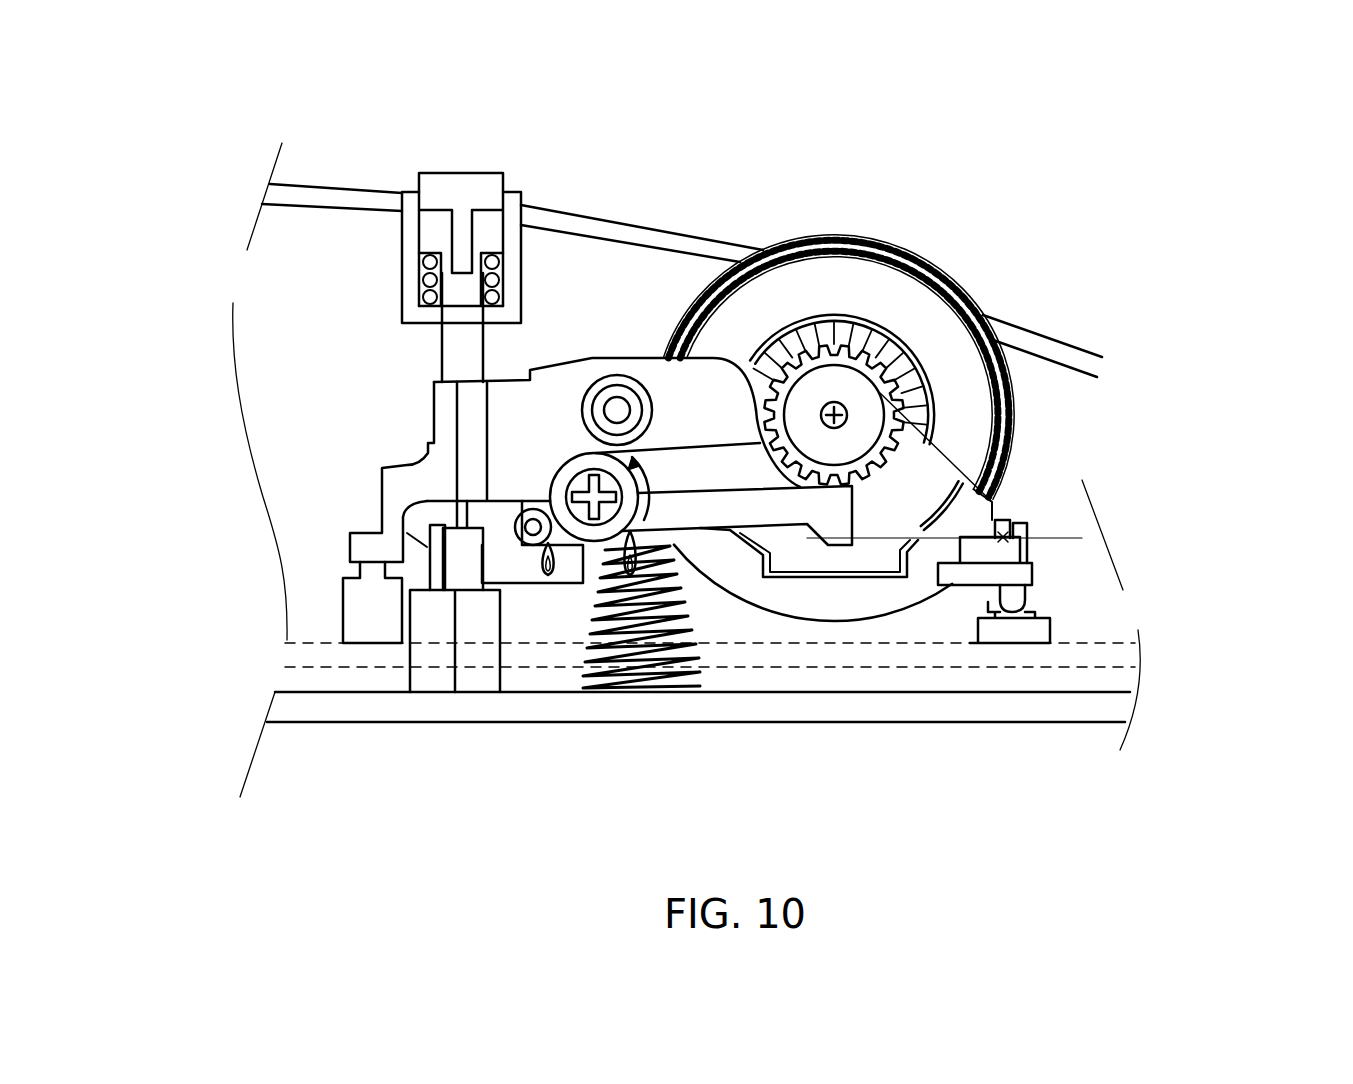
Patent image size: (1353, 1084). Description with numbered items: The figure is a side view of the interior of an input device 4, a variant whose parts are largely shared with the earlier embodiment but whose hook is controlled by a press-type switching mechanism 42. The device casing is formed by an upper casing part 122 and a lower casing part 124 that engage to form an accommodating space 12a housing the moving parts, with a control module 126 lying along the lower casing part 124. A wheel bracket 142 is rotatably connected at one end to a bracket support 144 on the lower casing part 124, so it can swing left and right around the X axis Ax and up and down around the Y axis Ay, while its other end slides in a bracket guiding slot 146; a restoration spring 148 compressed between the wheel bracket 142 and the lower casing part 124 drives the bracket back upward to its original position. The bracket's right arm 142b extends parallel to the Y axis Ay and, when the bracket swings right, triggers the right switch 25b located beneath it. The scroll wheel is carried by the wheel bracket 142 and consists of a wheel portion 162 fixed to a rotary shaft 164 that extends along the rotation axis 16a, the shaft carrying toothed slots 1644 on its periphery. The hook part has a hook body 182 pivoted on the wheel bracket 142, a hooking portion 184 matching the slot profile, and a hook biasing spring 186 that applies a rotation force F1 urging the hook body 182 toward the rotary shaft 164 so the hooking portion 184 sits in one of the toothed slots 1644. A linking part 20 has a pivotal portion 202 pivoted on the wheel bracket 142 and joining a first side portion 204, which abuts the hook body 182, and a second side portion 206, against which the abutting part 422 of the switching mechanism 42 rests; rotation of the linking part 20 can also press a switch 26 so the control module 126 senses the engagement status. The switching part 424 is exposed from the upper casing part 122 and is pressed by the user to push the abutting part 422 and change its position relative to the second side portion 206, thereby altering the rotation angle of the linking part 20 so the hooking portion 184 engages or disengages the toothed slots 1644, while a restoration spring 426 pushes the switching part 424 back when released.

The input device 4 is at (1085, 148).
The accommodating space 12a is at (598, 285).
The upper casing part 122 is at (555, 215).
The lower casing part 124 is at (1053, 713).
The control module 126 is at (1103, 643).
The wheel bracket 142 is at (823, 603).
The right arm 142b is at (1020, 577).
The bracket support 144 is at (1007, 523).
The bracket guiding slot 146 is at (475, 625).
The restoration spring 148 is at (662, 688).
The wheel portion 162 is at (913, 300).
The rotary shaft 164 is at (847, 383).
The toothed slots 1644 is at (893, 373).
The rotation axis 16a is at (843, 421).
The hook body 182 is at (775, 508).
The hooking portion 184 is at (838, 480).
The hook biasing spring 186 is at (558, 568).
The linking part 20 is at (407, 365).
The pivotal portion 202 is at (640, 373).
The first side portion 204 is at (755, 423).
The second side portion 206 is at (447, 418).
The right switch 25b is at (1047, 627).
The switch 26 is at (338, 605).
The switching mechanism 42 is at (308, 265).
The abutting part 422 is at (450, 350).
The switching part 424 is at (430, 183).
The restoration spring 426 is at (417, 278).
The X axis Ax is at (1060, 537).
The Y axis Ay is at (1002, 542).
The rotation force F1 is at (654, 488).